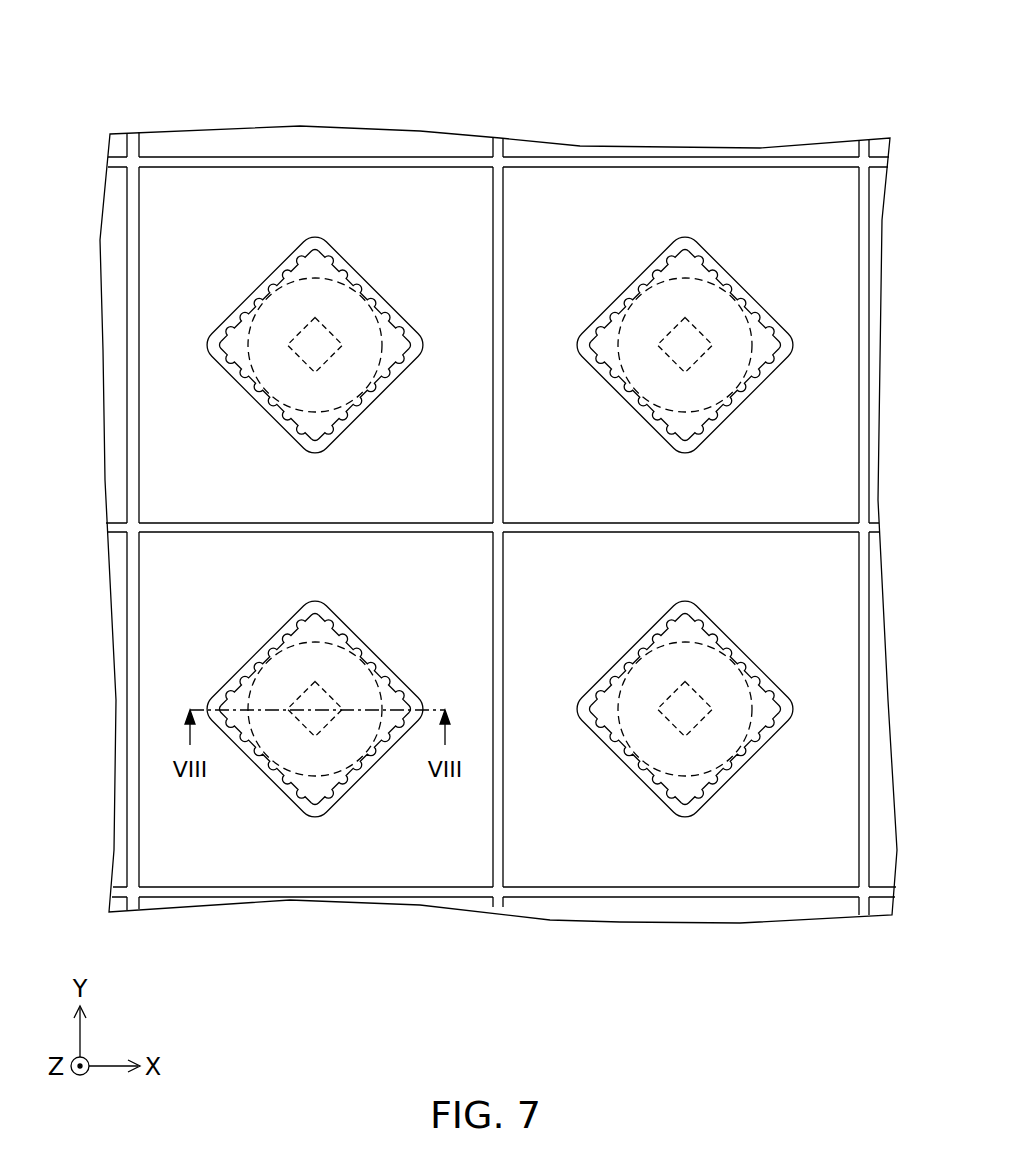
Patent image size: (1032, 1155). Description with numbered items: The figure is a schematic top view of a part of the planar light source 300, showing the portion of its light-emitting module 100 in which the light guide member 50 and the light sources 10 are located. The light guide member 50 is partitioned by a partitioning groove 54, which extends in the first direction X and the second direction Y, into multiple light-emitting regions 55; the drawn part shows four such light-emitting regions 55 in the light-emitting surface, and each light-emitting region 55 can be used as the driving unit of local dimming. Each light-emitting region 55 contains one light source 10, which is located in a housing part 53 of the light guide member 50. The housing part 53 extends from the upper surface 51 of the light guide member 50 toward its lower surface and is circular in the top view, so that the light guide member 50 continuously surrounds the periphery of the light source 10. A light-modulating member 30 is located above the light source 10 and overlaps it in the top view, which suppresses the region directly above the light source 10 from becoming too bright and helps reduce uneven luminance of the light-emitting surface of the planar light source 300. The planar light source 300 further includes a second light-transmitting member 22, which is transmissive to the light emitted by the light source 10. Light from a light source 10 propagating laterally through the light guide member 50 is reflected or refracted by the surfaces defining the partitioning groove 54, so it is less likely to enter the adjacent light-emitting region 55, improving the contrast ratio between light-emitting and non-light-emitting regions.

The light source 10 is at (325, 325).
The second light-transmitting member 22 is at (747, 768).
The light-modulating member 30 is at (720, 776).
The light guide member 50 is at (550, 921).
The upper surface 51 is at (433, 862).
The housing part 53 is at (337, 772).
The partitioning groove 54 is at (497, 205).
The light-emitting region 55 is at (237, 206).
The light-emitting module 100 is at (830, 135).
The planar light source 300 is at (715, 70).